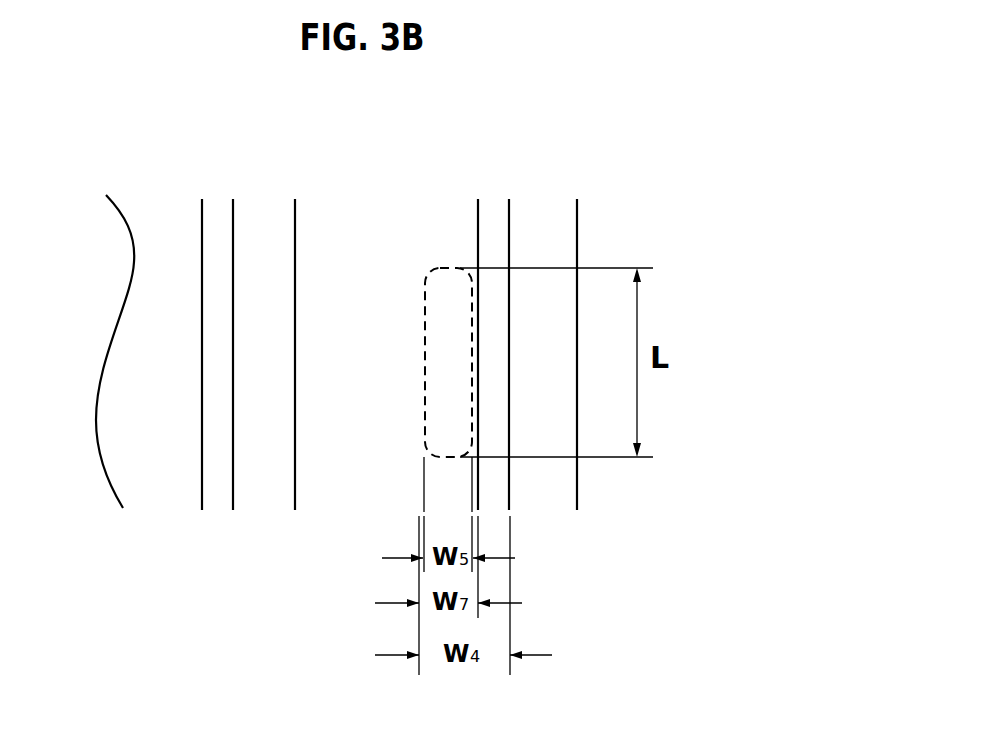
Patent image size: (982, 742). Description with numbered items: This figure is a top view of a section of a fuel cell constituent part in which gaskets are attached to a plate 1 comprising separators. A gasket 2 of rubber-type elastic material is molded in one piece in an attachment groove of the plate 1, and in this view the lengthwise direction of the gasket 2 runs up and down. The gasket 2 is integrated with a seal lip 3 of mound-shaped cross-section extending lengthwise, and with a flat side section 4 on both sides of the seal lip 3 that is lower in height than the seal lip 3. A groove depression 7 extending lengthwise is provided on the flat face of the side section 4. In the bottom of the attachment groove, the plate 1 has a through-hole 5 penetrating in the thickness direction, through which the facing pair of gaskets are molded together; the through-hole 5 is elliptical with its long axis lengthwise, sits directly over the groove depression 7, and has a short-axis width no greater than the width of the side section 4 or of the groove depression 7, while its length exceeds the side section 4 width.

The plate 1 is at (540, 492).
The gasket 2 is at (315, 227).
The seal lip 3 is at (356, 226).
The side section 4 is at (217, 214).
The through-hole 5 is at (462, 300).
The groove depression 7 is at (263, 218).